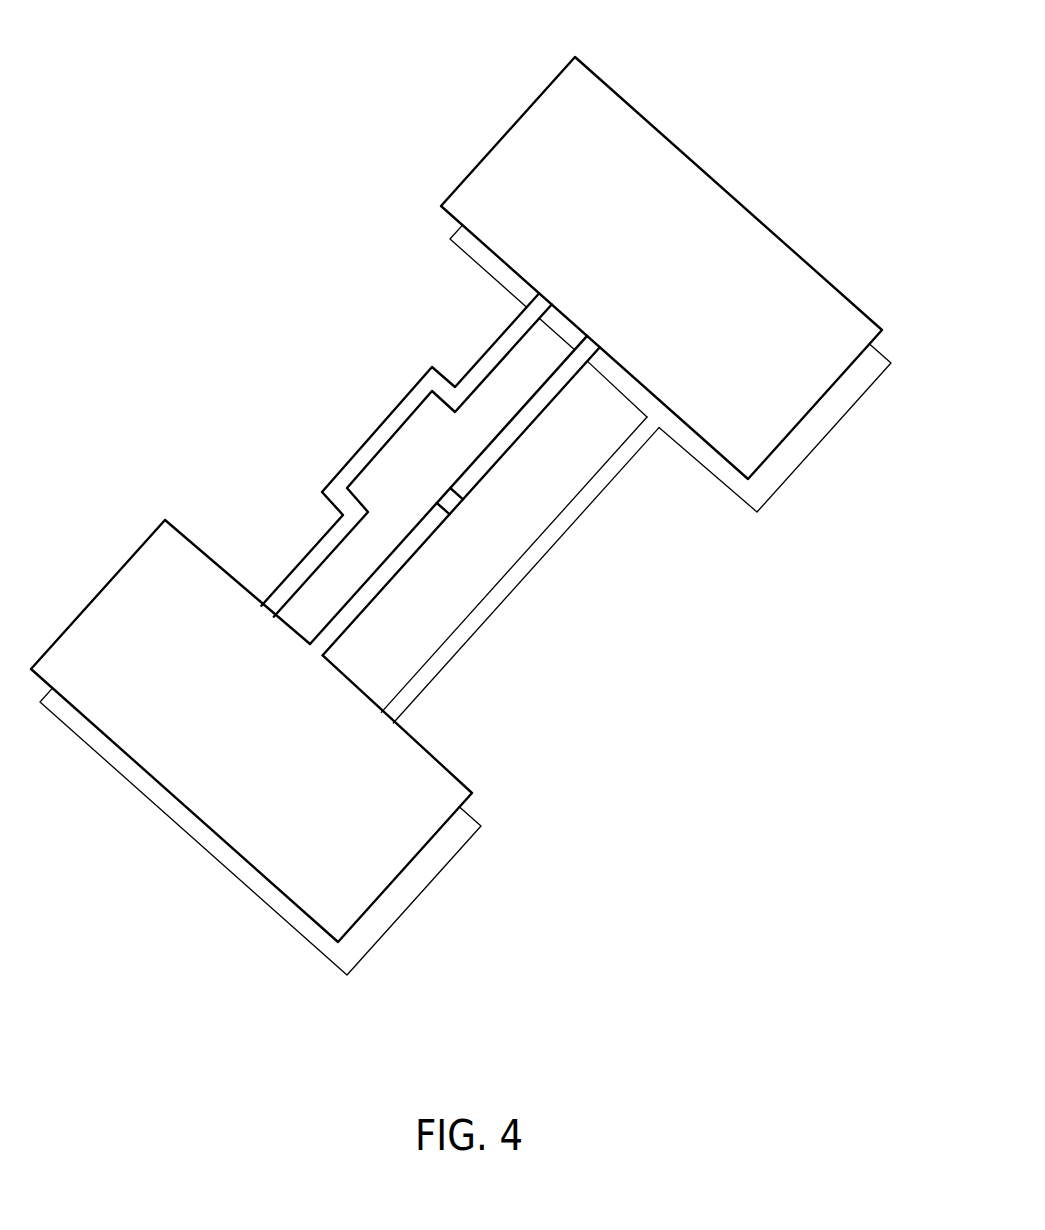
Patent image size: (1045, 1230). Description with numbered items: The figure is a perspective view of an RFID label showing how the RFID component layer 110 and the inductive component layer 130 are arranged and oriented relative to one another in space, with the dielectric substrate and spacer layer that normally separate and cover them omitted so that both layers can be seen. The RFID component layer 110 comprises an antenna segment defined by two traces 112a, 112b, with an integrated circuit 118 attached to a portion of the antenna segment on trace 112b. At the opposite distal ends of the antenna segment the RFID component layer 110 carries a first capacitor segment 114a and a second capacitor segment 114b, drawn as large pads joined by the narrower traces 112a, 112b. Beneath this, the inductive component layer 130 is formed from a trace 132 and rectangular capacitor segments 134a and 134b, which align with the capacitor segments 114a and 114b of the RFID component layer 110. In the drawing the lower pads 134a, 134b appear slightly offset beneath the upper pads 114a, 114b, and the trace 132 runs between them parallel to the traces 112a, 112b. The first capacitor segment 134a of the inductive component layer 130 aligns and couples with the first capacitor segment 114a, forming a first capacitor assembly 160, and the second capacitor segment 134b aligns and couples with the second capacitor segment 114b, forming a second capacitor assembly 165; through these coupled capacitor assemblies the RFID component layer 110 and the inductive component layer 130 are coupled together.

The RFID component layer 110 is at (490, 531).
The trace 112a is at (367, 440).
The trace 112b is at (364, 609).
The first capacitor segment 114a is at (723, 183).
The second capacitor segment 114b is at (103, 590).
The integrated circuit 118 is at (458, 503).
The inductive component layer 130 is at (465, 641).
The trace 132 is at (517, 588).
The first capacitor segment 134a is at (817, 449).
The second capacitor segment 134b is at (458, 850).
The first capacitor assembly 160 is at (490, 499).
The second capacitor assembly 165 is at (465, 619).